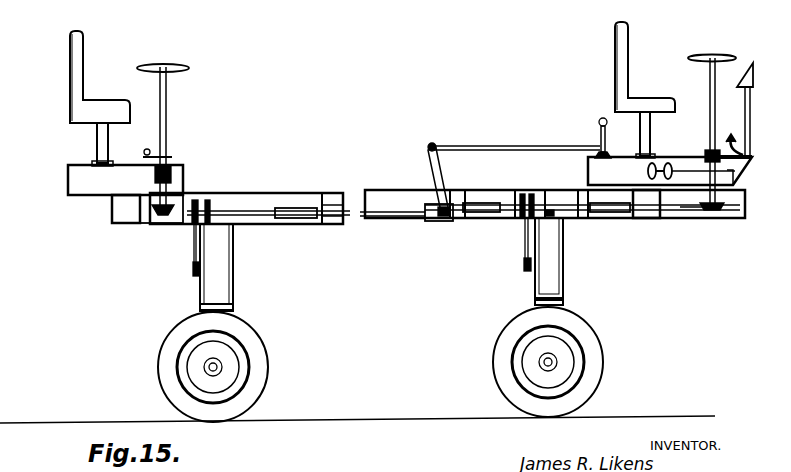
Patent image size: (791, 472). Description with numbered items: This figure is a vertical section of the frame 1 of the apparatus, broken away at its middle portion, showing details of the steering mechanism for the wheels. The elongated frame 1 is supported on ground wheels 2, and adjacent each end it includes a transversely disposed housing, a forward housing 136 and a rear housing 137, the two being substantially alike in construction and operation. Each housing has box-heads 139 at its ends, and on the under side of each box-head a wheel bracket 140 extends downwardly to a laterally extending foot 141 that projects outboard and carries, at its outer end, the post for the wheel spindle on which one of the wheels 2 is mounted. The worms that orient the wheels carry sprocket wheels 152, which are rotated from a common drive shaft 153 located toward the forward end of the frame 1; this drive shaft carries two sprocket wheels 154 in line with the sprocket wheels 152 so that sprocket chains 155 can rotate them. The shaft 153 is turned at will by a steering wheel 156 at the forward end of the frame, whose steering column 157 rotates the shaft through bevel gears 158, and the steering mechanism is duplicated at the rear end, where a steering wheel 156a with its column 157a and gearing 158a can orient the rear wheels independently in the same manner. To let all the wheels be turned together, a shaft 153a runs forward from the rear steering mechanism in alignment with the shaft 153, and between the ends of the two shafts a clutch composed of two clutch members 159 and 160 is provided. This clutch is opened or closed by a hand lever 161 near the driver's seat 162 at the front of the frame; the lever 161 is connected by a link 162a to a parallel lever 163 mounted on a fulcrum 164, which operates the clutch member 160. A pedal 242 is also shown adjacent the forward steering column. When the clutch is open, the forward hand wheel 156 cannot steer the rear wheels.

The frame 1 is at (378, 192).
The ground wheels 2 is at (265, 358).
The forward housing 136 is at (576, 251).
The rear housing 137 is at (236, 242).
The box-heads 139 is at (262, 179).
The wheel bracket 140 is at (222, 237).
The foot 141 is at (200, 308).
The sprocket wheels 152 is at (524, 265).
The drive shaft 153 is at (193, 269).
The shaft 153a is at (392, 217).
The sprocket wheels 154 is at (206, 200).
The sprocket chains 155 is at (192, 251).
The steering wheel 156 is at (713, 54).
The steering wheel 156a is at (185, 53).
The steering column 157 is at (710, 71).
The steering column 157a is at (167, 97).
The bevel gears 158 is at (722, 208).
The steering column foot 158a is at (160, 216).
The clutch member 159 is at (425, 219).
The clutch member 160 is at (438, 223).
The hand lever 161 is at (598, 128).
The driver's seat 162 is at (616, 41).
The link 162a is at (482, 146).
The lever 163 is at (430, 168).
The fulcrum 164 is at (445, 222).
The pedal 242 is at (658, 163).